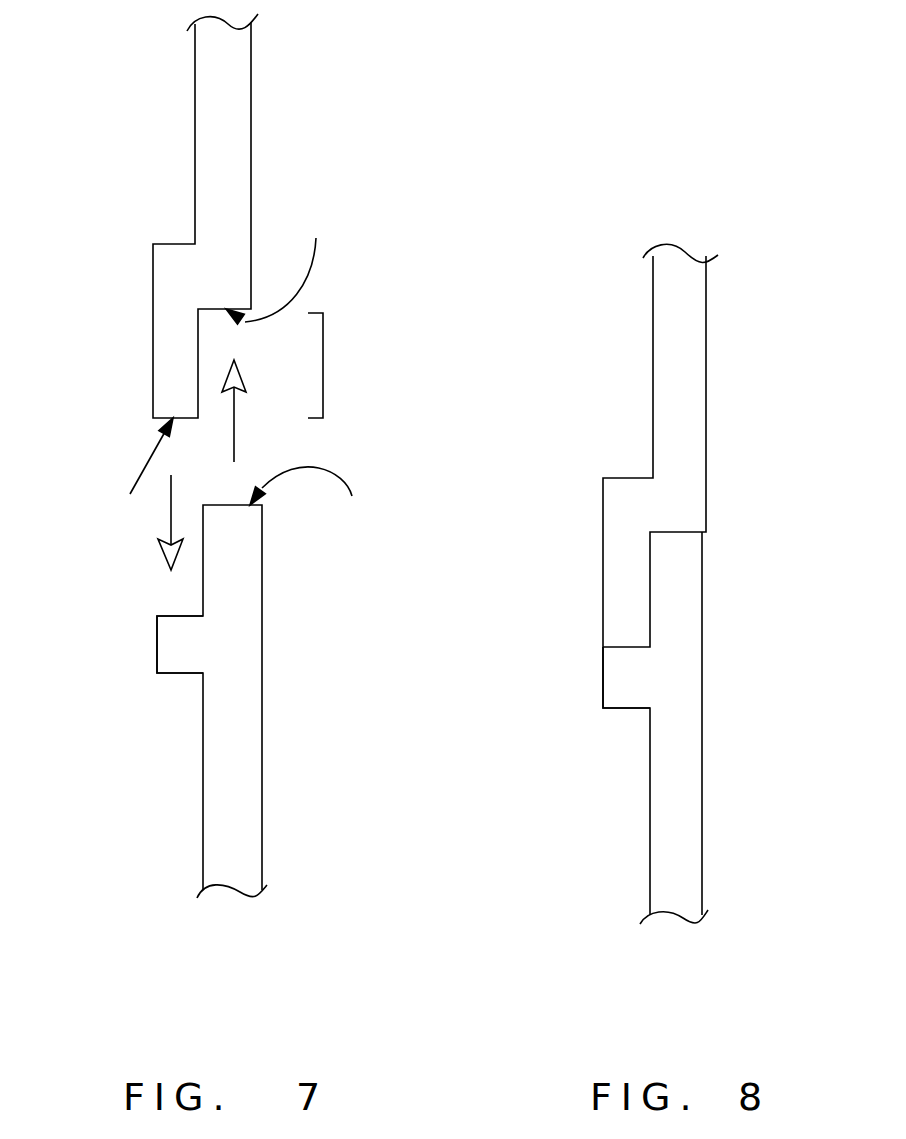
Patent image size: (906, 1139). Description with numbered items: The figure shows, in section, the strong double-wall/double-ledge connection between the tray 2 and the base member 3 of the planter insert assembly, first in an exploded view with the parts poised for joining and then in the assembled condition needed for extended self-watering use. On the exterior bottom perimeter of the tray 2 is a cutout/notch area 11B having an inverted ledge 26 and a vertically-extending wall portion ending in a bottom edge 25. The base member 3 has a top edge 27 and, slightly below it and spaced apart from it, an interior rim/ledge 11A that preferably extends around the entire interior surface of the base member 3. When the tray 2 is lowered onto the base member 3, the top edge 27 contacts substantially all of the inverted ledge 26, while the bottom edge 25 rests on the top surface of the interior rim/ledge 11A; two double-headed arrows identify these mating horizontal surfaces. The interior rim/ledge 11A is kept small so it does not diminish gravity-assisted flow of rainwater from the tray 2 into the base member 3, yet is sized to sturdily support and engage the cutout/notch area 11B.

In FIG. 7, the tray 2 is at (238, 62).
In FIG. 8, the tray 2 is at (693, 342).
In FIG. 7, the base member 3 is at (248, 852).
In FIG. 8, the base member 3 is at (688, 850).
In FIG. 7, the interior rim/ledge 11A is at (167, 653).
In FIG. 8, the interior rim/ledge 11A is at (627, 680).
In FIG. 7, the cutout/notch area 11B is at (323, 369).
In FIG. 7, the bottom edge 25 is at (116, 461).
In FIG. 7, the inverted ledge 26 is at (294, 258).
In FIG. 7, the top edge 27 is at (314, 512).